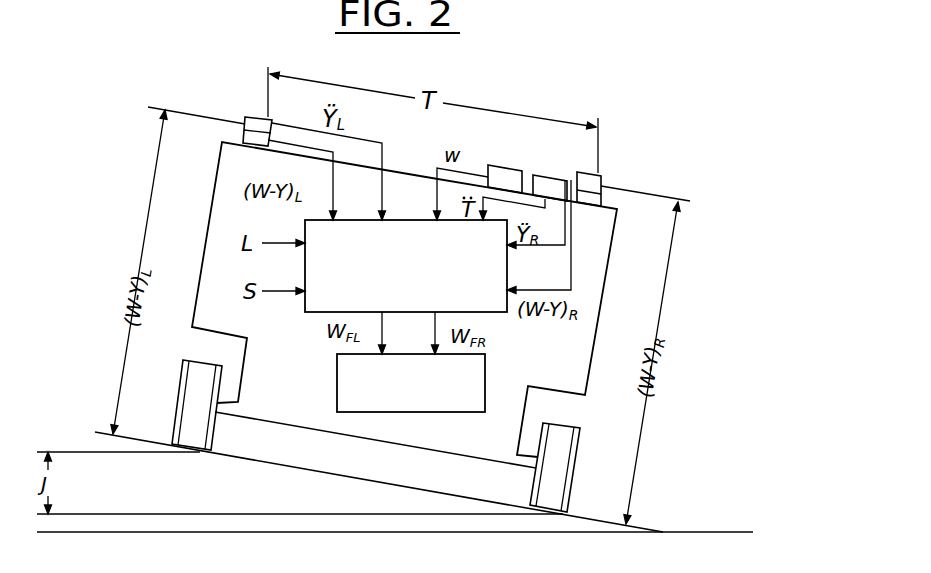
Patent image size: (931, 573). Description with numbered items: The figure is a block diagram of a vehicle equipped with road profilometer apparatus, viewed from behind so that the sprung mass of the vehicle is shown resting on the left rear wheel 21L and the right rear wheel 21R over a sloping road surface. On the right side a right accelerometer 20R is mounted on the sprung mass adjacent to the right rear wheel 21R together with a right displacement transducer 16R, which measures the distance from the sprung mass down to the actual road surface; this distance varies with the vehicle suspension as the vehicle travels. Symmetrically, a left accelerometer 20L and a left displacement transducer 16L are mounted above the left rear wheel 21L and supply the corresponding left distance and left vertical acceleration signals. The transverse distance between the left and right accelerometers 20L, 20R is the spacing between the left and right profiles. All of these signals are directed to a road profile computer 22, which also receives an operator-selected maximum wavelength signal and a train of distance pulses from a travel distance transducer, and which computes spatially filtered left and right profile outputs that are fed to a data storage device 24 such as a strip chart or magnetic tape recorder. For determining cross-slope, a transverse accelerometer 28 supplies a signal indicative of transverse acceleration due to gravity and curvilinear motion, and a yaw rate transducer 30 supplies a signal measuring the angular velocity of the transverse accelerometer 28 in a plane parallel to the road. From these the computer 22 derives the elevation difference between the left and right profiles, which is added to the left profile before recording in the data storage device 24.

The left displacement transducer 16L is at (244, 139).
The right displacement transducer 16R is at (590, 203).
The left accelerometer 20L is at (251, 116).
The right accelerometer 20R is at (603, 175).
The left rear wheel 21L is at (195, 395).
The right rear wheel 21R is at (565, 445).
The road profile computer 22 is at (310, 266).
The data storage device 24 is at (345, 398).
The transverse accelerometer 28 is at (552, 177).
The yaw rate transducer 30 is at (507, 166).